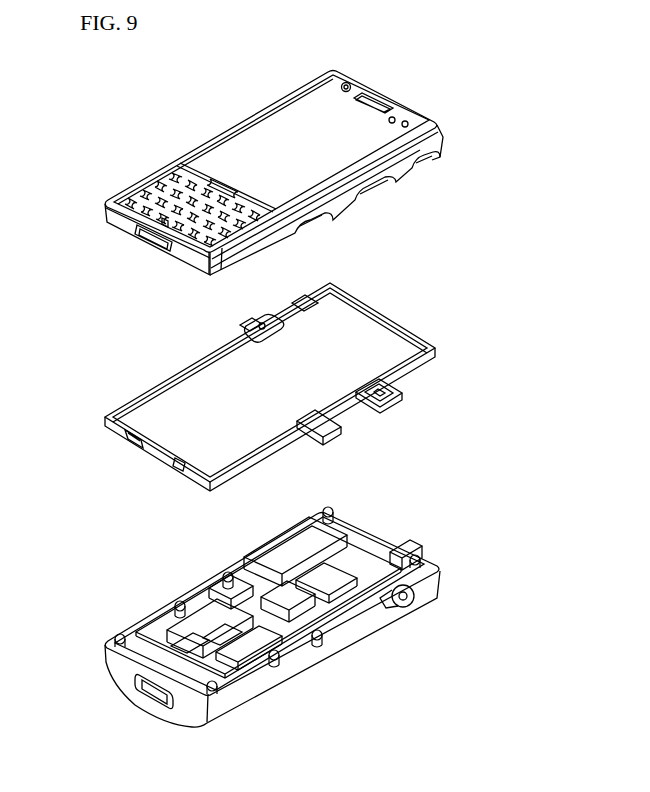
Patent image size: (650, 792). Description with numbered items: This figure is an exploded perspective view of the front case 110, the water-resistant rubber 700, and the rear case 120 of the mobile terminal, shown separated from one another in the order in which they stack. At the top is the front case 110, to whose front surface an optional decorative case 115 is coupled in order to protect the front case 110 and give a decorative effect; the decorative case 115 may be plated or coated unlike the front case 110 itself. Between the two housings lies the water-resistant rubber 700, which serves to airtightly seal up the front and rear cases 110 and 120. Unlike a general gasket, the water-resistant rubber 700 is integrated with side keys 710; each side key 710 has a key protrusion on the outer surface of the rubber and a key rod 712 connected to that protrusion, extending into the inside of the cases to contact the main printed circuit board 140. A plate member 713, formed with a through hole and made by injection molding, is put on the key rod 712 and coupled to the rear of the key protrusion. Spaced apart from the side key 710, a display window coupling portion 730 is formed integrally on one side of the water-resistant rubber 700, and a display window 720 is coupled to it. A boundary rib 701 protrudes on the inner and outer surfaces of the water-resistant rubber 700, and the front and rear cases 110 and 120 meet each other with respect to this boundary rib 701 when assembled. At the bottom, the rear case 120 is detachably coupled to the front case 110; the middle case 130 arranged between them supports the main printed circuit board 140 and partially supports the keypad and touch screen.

The front case 110 is at (397, 108).
The decorative case 115 is at (435, 147).
The water-resistant rubber 700 is at (273, 373).
The boundary rib 701 is at (127, 440).
The side key 710 is at (288, 336).
The key rod 712 is at (257, 327).
The plate member 713 is at (243, 328).
The display window 720 is at (323, 432).
The display window coupling portion 730 is at (317, 417).
The rear case 120 is at (304, 617).
The middle case 130 is at (407, 567).
The main printed circuit board 140 is at (253, 557).